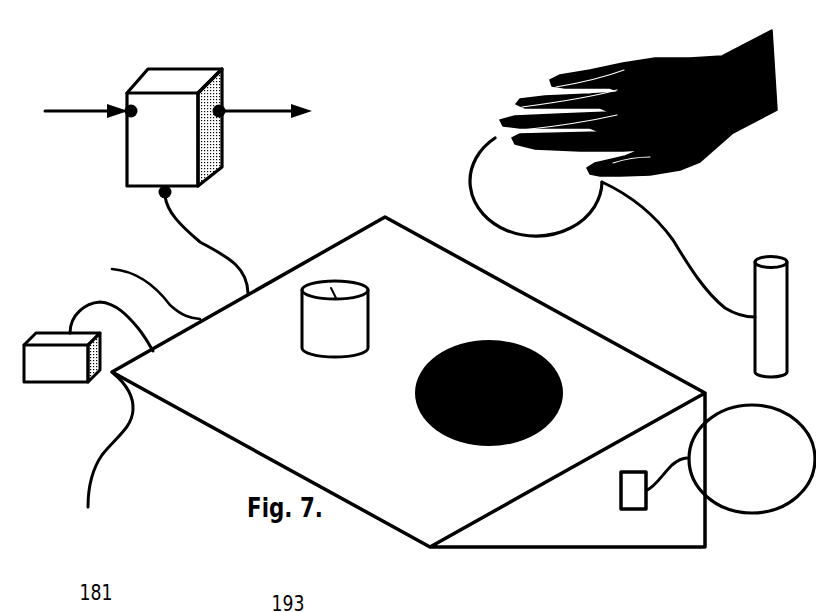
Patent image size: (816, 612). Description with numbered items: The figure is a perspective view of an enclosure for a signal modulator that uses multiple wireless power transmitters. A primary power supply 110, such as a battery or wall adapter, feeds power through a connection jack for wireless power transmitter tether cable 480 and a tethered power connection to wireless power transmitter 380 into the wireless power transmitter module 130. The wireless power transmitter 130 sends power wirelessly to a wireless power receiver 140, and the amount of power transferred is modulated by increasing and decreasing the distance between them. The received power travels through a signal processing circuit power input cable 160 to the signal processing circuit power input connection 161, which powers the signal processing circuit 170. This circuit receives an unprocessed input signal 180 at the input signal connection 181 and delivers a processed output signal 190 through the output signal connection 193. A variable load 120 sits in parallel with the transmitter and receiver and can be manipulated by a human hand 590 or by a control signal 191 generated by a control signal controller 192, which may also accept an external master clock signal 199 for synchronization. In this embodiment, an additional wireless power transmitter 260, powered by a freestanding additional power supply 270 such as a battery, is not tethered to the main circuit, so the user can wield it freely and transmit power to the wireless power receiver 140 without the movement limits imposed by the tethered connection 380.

The primary power supply 110 is at (137, 287).
The variable load 120 is at (333, 358).
The wireless power transmitter module 130 is at (800, 420).
The wireless power receiver 140 is at (415, 394).
The signal processing circuit power input cable 160 is at (208, 222).
The signal processing circuit power input connection 161 is at (157, 200).
The signal processing circuit 170 is at (140, 78).
The unprocessed input signal 180 is at (86, 100).
The input signal connection 181 is at (128, 110).
The processed output signal 190 is at (267, 98).
The control signal 191 is at (132, 320).
The control signal controller 192 is at (58, 383).
The output signal connection 193 is at (222, 110).
The external master clock signal 199 is at (101, 455).
The additional wireless power transmitter 260 is at (470, 178).
The additional power supply 270 is at (767, 260).
The tethered power connection to wireless power transmitter 380 is at (753, 518).
The connection jack for wireless power transmitter tether cable 480 is at (632, 510).
The human hand 590 is at (607, 62).